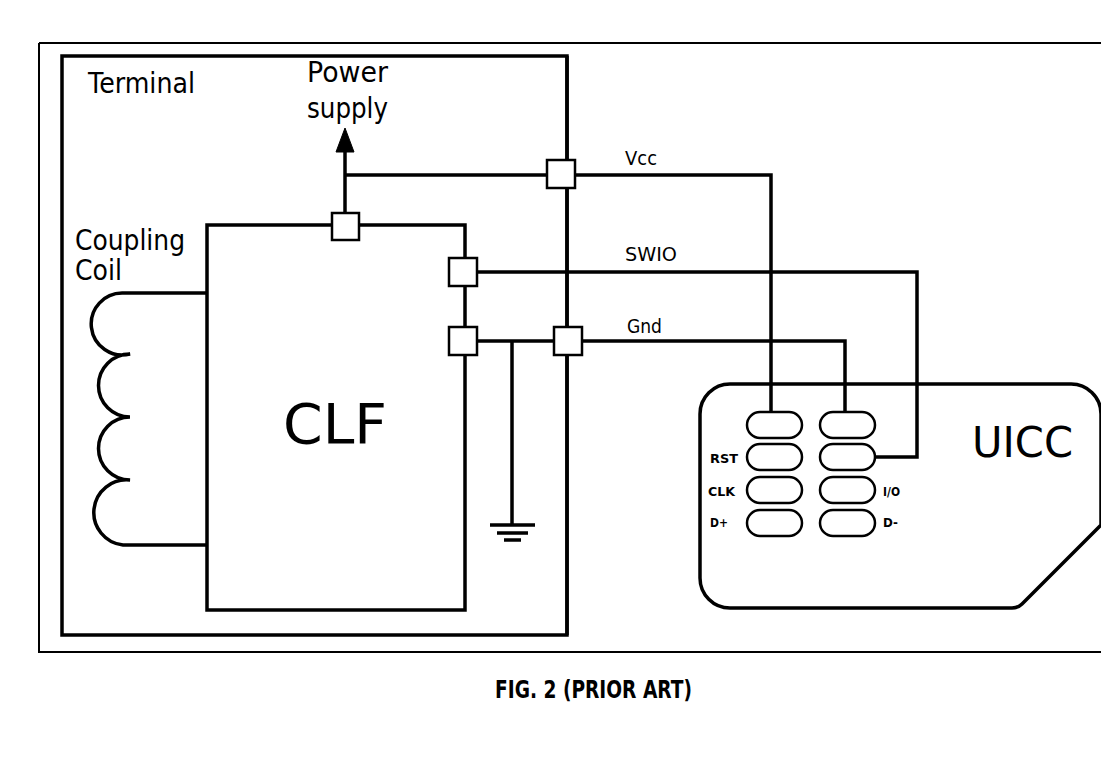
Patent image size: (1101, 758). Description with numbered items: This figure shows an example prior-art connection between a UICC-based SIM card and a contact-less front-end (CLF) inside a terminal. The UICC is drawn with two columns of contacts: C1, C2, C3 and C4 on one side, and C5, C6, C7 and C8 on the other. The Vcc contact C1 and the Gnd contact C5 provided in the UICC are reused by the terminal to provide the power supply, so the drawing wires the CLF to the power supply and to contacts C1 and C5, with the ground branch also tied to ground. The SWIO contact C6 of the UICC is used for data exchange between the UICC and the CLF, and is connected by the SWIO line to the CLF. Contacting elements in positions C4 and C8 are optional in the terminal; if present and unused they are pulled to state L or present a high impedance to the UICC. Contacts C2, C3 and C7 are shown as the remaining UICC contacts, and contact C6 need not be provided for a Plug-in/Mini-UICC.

The Vcc contact C1 is at (774, 425).
The contact C2 is at (774, 457).
The contact C3 is at (774, 490).
The contact C4 is at (774, 523).
The Gnd contact C5 is at (847, 425).
The SWIO contact C6 is at (847, 457).
The contact C7 is at (847, 490).
The contact C8 is at (847, 523).